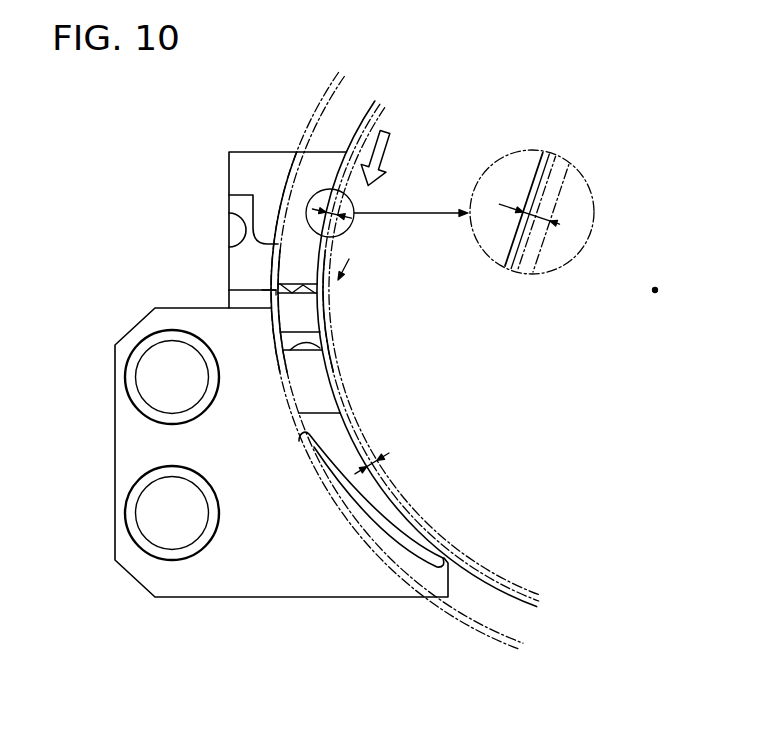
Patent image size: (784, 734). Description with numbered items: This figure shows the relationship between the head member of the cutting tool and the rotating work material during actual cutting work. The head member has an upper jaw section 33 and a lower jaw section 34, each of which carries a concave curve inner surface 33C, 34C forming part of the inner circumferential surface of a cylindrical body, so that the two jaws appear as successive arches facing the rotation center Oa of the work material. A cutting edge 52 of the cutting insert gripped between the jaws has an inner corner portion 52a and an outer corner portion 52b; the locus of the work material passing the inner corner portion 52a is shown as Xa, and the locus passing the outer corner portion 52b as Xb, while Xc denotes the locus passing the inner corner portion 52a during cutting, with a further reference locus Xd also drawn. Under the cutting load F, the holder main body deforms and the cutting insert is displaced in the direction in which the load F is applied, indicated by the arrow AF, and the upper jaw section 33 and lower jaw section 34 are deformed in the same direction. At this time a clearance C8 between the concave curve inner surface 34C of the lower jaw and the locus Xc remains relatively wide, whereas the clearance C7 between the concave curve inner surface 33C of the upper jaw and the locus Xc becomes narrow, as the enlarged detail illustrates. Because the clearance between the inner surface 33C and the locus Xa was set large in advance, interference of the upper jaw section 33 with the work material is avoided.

The upper jaw section 33 is at (323, 160).
The concave curve inner surface 33C is at (326, 238).
The lower jaw section 34 is at (322, 442).
The concave curve inner surface 34C is at (352, 444).
The cutting edge 52 is at (290, 315).
The inner corner portion 52a is at (320, 292).
The outer corner portion 52b is at (262, 295).
The arrow AF is at (392, 156).
The cutting load F is at (351, 269).
The clearance C7 is at (352, 214).
The clearance C8 is at (385, 455).
The locus of the work material Xa is at (398, 488).
The locus of the work material Xb is at (369, 545).
The locus of the work material Xc is at (418, 522).
The reference circle Xd is at (347, 519).
The rotation center Oa is at (656, 276).